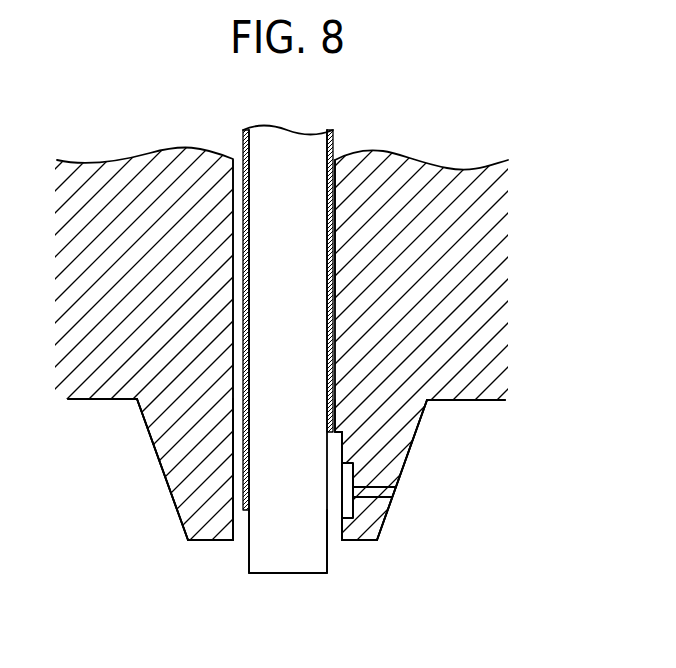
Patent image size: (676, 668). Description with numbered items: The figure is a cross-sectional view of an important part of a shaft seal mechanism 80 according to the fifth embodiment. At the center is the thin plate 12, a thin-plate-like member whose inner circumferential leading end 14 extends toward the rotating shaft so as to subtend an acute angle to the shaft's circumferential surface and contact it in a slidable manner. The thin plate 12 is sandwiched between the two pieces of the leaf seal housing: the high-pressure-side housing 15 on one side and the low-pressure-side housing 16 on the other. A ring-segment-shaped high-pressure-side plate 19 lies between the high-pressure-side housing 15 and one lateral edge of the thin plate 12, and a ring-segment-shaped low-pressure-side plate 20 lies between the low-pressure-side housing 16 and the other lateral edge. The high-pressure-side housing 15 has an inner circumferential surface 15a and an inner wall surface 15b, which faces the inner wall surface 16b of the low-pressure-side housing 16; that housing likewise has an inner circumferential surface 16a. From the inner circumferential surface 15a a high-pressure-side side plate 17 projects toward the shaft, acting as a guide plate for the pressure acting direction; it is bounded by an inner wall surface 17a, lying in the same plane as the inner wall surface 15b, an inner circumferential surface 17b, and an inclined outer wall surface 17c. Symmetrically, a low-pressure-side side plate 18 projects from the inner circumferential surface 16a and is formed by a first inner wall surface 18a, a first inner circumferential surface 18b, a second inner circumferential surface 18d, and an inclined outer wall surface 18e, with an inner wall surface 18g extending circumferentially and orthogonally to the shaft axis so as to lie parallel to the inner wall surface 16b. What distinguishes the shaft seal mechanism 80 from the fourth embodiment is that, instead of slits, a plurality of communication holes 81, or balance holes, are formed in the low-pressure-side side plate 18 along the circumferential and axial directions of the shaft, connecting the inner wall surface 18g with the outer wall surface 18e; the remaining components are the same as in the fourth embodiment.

The shaft seal mechanism 80 is at (540, 142).
The thin plate 12 is at (300, 250).
The inner circumferential leading end 14 is at (287, 562).
The high-pressure-side housing 15 is at (170, 152).
The inner circumferential surface 15a is at (83, 402).
The inner wall surface 15b is at (237, 300).
The low-pressure-side housing 16 is at (412, 162).
The inner circumferential surface 16a is at (483, 402).
The inner wall surface 16b is at (325, 185).
The high-pressure-side side plate 17 is at (177, 493).
The inner wall surface 17a is at (236, 480).
The inner circumferential surface 17b is at (208, 543).
The outer wall surface 17c is at (160, 467).
The low-pressure-side side plate 18 is at (397, 457).
The first inner wall surface 18a is at (332, 412).
The first inner circumferential surface 18b is at (336, 434).
The second inner circumferential surface 18d is at (355, 543).
The outer wall surface 18e is at (413, 439).
The inner wall surface 18g is at (342, 527).
The high-pressure-side plate 19 is at (240, 230).
The low-pressure-side plate 20 is at (333, 270).
The communication holes 81 is at (392, 497).